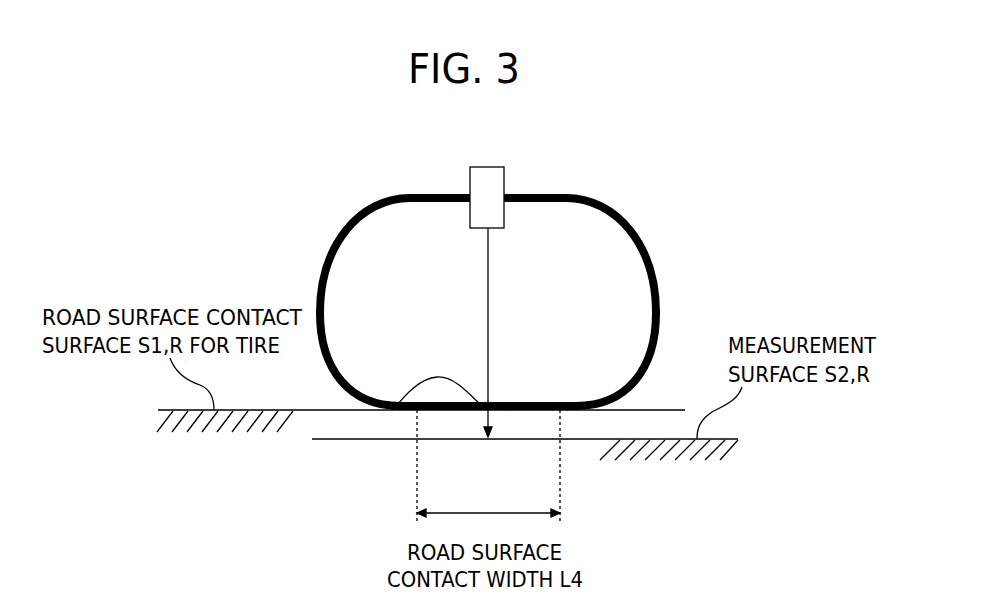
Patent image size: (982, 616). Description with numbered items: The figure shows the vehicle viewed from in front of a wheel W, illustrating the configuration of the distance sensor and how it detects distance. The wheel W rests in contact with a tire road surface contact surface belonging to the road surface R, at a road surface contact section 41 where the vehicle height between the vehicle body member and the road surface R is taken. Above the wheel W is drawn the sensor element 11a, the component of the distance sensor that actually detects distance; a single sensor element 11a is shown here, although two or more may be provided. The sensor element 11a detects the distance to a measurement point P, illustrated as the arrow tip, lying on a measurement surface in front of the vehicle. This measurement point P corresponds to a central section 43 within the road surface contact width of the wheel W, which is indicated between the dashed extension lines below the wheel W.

The sensor element 11a is at (492, 167).
The road surface contact section 41 is at (508, 410).
The central section 43 is at (393, 410).
The wheel W is at (331, 252).
The road surface R is at (662, 410).
The measurement point P is at (488, 438).